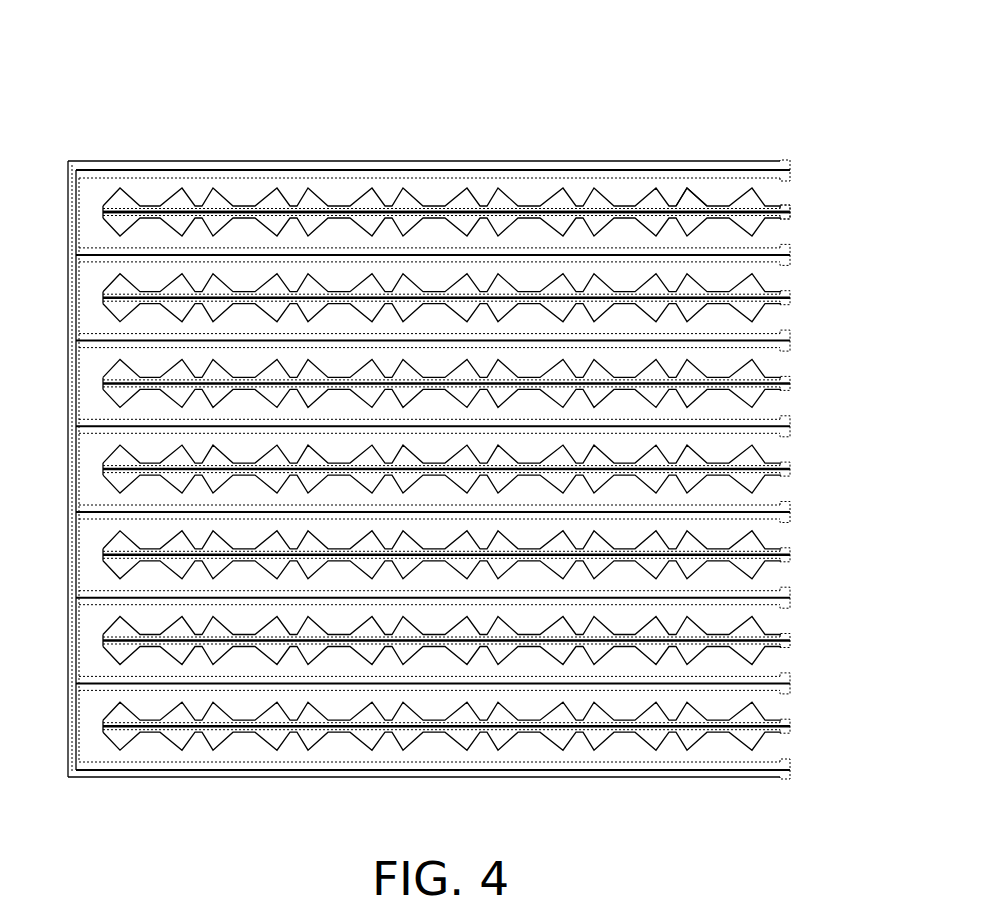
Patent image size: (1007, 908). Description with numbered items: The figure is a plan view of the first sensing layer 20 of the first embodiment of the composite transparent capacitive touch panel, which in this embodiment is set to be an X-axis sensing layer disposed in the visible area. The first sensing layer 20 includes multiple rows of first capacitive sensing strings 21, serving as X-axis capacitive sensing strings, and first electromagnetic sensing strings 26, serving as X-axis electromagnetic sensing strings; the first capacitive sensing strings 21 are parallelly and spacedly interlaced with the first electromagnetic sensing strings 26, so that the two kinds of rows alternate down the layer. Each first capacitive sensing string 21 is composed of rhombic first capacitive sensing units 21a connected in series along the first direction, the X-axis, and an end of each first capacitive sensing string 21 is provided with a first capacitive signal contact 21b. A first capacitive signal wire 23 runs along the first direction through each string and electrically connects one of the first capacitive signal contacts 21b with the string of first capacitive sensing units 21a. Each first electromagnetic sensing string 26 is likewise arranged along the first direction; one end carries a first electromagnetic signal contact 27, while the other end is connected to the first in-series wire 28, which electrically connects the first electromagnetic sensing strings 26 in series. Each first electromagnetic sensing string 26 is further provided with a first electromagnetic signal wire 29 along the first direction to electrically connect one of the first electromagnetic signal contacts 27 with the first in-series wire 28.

The first sensing layer 20 is at (114, 137).
The first capacitive sensing string 21 is at (583, 200).
The first capacitive sensing unit 21a is at (690, 202).
The first capacitive signal contact 21b is at (788, 207).
The first capacitive signal wire 23 is at (652, 214).
The first electromagnetic sensing string 26 is at (233, 158).
The first electromagnetic signal contact 27 is at (784, 162).
The first in-series wire 28 is at (70, 278).
The first electromagnetic signal wire 29 is at (338, 166).